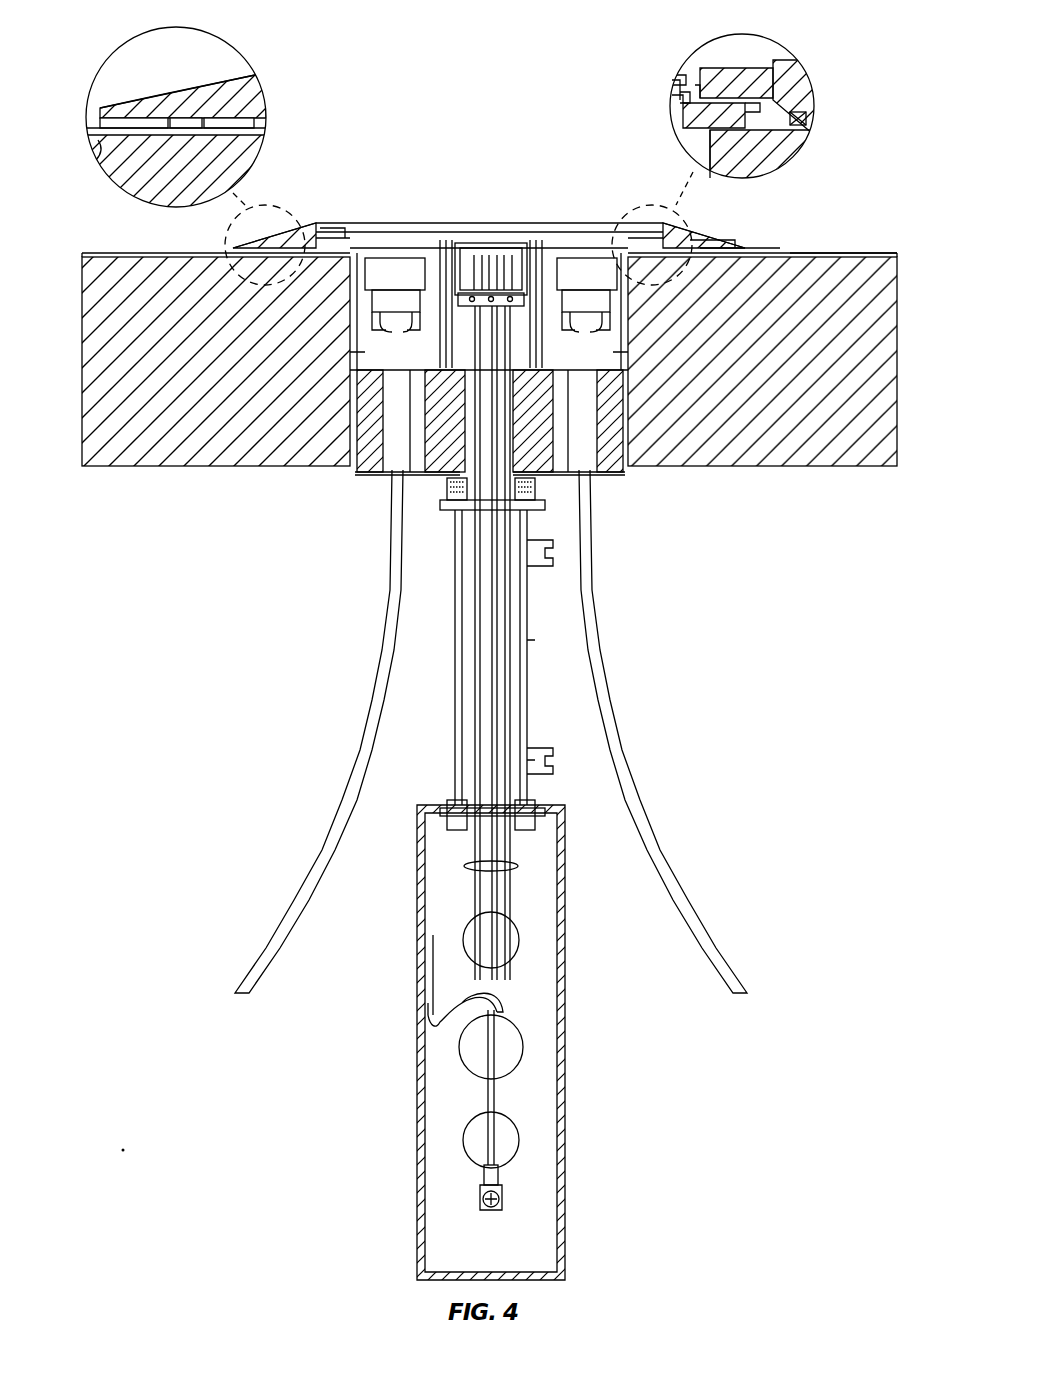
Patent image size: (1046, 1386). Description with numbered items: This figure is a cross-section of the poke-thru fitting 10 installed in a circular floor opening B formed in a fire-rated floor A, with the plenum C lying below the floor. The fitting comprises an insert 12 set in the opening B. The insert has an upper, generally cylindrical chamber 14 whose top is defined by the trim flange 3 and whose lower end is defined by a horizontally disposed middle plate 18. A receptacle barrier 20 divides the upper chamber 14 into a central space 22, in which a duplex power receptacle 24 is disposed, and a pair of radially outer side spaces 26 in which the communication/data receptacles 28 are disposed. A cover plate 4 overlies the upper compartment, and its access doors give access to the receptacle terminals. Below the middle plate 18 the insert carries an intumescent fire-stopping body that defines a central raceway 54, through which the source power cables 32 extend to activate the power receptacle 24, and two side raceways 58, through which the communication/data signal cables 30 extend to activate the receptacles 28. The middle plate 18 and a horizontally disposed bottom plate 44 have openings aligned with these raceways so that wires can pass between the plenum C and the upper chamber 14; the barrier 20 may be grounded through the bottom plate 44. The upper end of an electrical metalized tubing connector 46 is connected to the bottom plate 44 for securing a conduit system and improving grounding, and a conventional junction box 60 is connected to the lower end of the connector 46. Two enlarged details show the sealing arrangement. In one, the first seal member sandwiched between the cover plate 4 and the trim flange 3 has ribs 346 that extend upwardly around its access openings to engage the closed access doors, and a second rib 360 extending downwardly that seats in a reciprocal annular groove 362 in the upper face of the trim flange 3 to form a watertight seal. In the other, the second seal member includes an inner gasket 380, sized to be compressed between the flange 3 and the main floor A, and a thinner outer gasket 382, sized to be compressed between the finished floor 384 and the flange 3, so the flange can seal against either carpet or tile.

The outer gasket 382 is at (152, 92).
The inner gasket 380 is at (258, 80).
The finished floor 384 is at (98, 154).
The floor A is at (136, 195).
The floor opening B is at (628, 443).
The plenum C is at (704, 586).
The communication/data receptacles 28 is at (392, 272).
The central space 22 is at (452, 252).
The power receptacle 24 is at (470, 258).
The cover plate 4 is at (333, 225).
The ribs 346 is at (672, 98).
The second rib 360 is at (780, 80).
The annular groove 362 is at (720, 126).
The side spaces 26 is at (362, 352).
The upper chamber 14 is at (722, 245).
The trim flange 3 is at (734, 242).
The receptacle barrier 20 is at (770, 253).
The middle plate 18 is at (832, 253).
The side raceways 58 is at (337, 464).
The bottom plate 44 is at (378, 455).
The central raceway 54 is at (442, 494).
The insert 12 is at (632, 404).
The poke-thru fitting 10 is at (242, 585).
The electrical metalized tubing connector 46 is at (456, 690).
The communication/data signal cables 30 is at (306, 871).
The source power cables 32 is at (495, 865).
The junction box 60 is at (566, 1016).